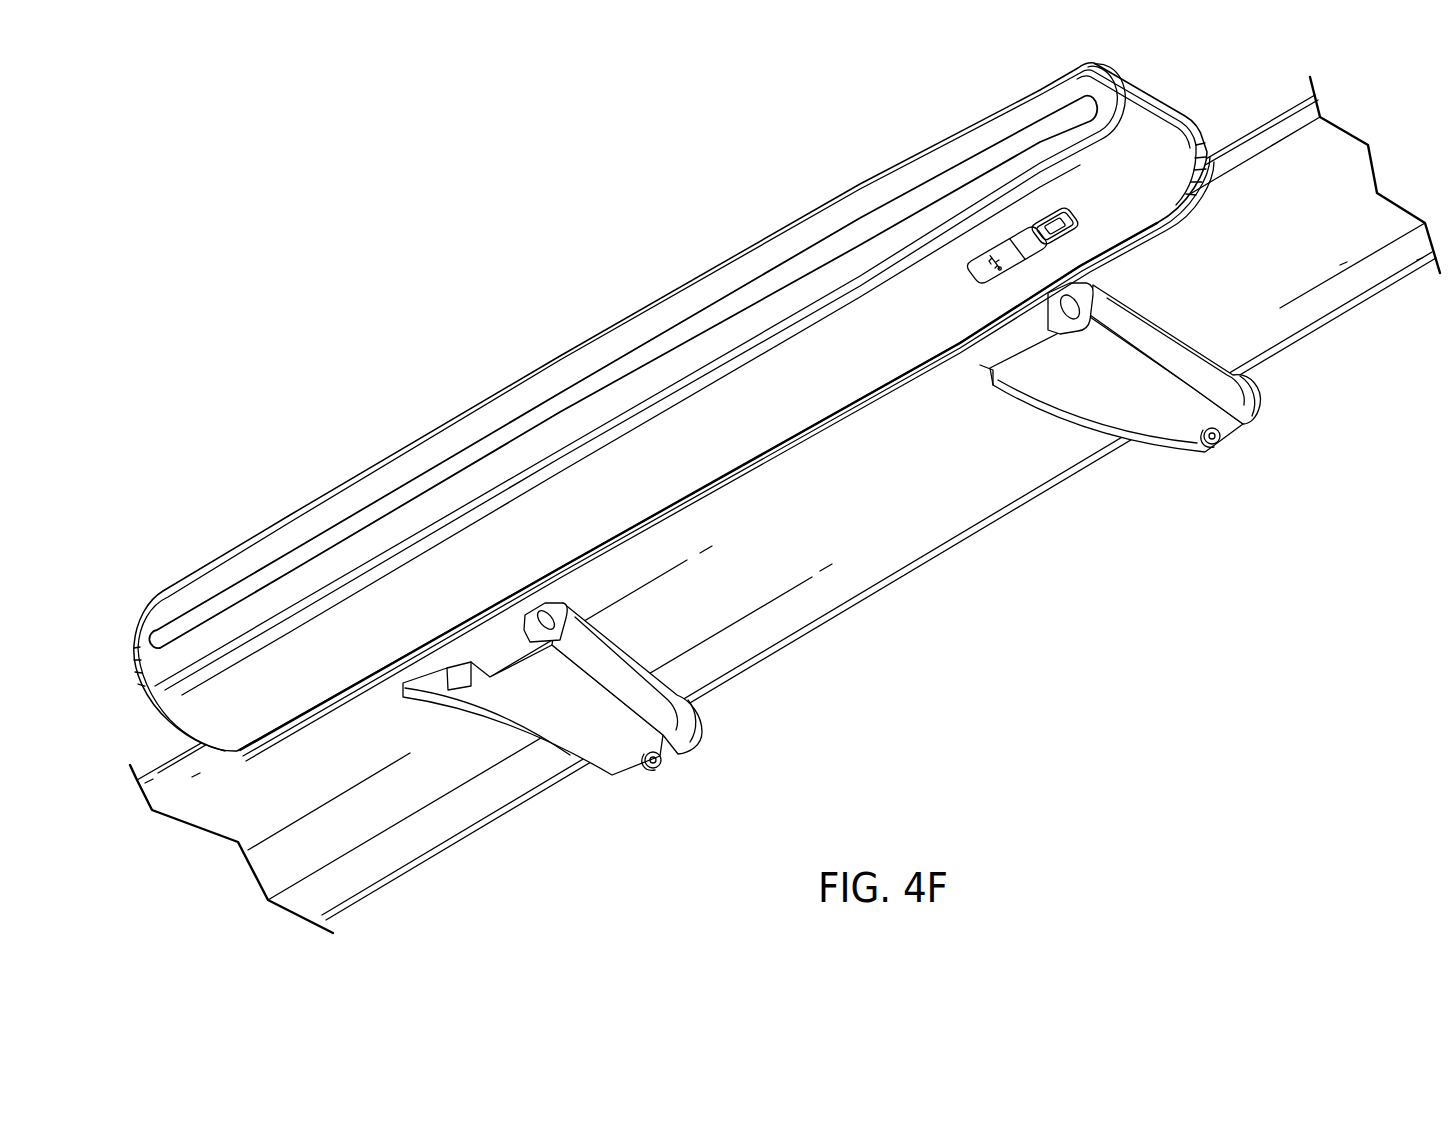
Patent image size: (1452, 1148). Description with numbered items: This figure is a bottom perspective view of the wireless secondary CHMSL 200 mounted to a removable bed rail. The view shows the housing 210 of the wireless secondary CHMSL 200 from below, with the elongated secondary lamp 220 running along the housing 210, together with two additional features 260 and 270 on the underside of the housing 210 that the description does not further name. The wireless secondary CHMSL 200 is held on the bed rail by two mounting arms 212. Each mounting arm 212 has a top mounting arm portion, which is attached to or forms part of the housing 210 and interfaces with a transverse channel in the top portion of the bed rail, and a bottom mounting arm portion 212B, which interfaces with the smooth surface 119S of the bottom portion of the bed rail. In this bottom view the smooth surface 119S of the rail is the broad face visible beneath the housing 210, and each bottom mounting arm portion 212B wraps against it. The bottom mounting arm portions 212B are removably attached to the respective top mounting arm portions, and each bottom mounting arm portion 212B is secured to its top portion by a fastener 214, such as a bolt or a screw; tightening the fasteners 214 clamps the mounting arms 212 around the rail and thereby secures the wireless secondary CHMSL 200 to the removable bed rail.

The wireless secondary CHMSL 200 is at (708, 454).
The housing 210 is at (674, 412).
The secondary lamp 220 is at (917, 190).
The USB port 260 is at (976, 278).
The connector port 270 is at (1079, 222).
The mounting arm 212 is at (843, 564).
The bottom mounting arm portion 212B is at (575, 700).
The fastener 214 is at (665, 766).
The smooth surface 119S is at (843, 547).